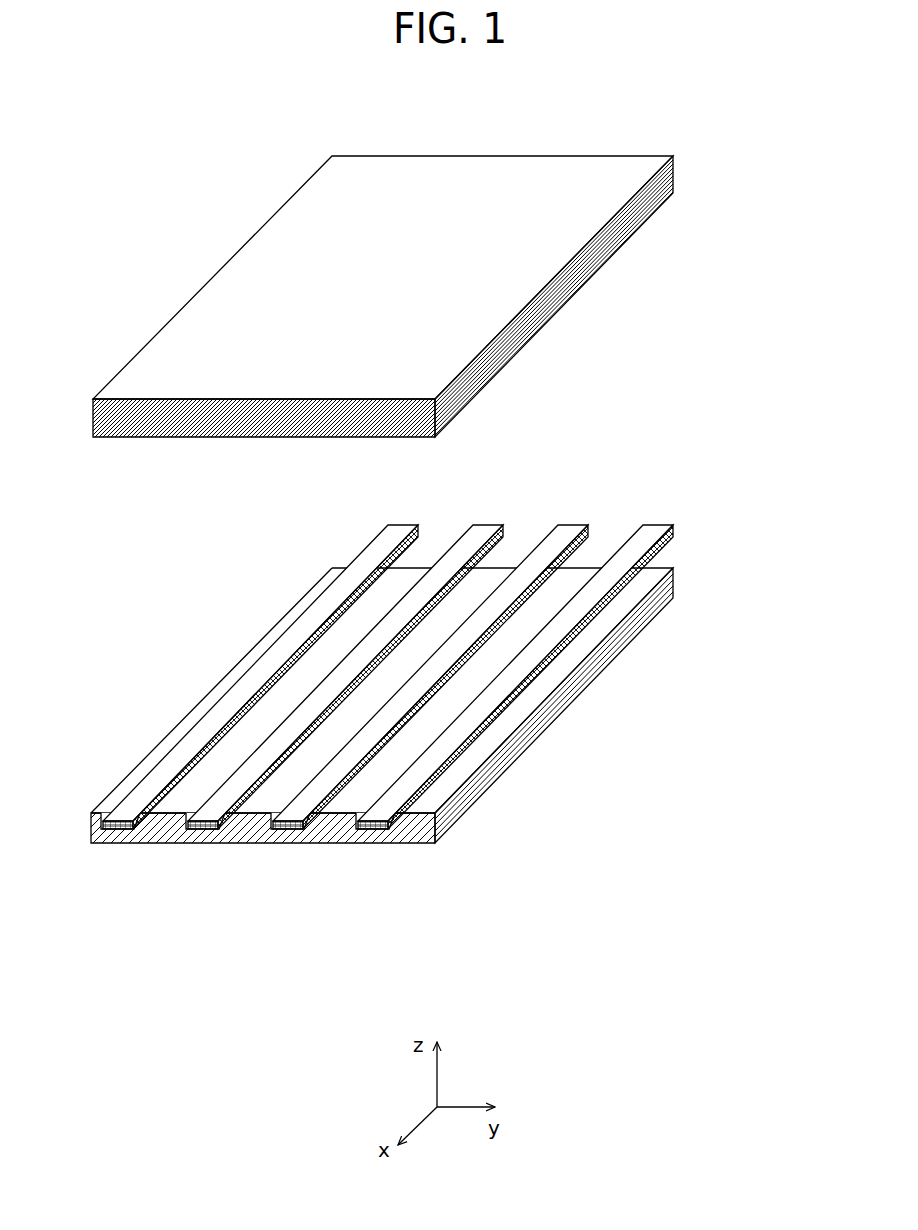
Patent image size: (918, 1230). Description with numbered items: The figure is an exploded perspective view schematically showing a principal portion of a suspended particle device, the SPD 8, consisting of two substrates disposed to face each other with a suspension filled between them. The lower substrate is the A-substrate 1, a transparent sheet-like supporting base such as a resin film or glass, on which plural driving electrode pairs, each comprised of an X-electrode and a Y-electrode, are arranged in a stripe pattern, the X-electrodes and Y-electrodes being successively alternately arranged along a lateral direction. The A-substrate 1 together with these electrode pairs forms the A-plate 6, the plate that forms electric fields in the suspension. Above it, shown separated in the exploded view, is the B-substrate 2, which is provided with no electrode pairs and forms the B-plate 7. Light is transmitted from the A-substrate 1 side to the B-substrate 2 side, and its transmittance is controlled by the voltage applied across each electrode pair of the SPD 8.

The A-substrate 1 is at (545, 718).
The B-substrate 2 is at (393, 296).
The A-plate 6 is at (422, 734).
The second substrate unit 7 is at (423, 309).
The SPD 8 is at (464, 549).